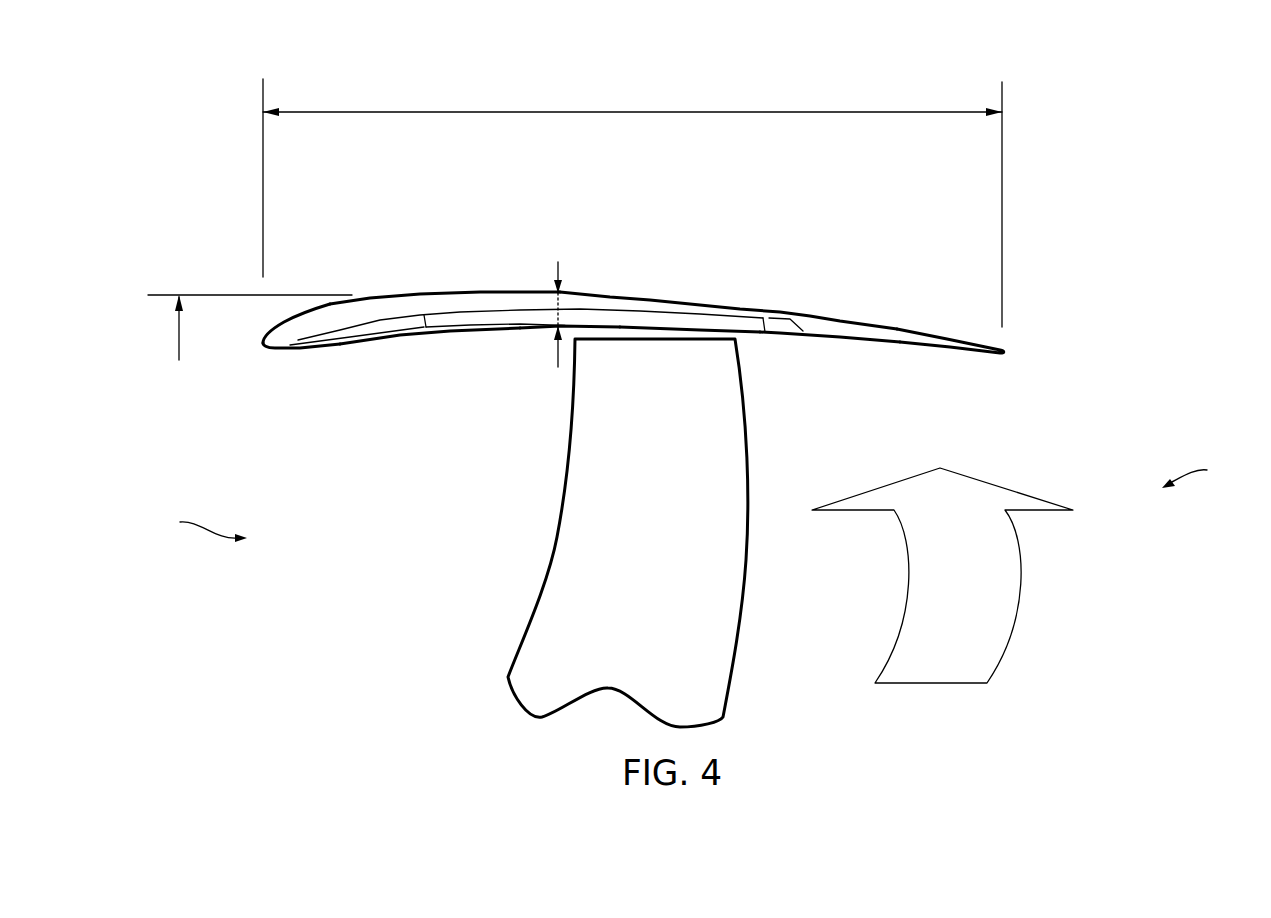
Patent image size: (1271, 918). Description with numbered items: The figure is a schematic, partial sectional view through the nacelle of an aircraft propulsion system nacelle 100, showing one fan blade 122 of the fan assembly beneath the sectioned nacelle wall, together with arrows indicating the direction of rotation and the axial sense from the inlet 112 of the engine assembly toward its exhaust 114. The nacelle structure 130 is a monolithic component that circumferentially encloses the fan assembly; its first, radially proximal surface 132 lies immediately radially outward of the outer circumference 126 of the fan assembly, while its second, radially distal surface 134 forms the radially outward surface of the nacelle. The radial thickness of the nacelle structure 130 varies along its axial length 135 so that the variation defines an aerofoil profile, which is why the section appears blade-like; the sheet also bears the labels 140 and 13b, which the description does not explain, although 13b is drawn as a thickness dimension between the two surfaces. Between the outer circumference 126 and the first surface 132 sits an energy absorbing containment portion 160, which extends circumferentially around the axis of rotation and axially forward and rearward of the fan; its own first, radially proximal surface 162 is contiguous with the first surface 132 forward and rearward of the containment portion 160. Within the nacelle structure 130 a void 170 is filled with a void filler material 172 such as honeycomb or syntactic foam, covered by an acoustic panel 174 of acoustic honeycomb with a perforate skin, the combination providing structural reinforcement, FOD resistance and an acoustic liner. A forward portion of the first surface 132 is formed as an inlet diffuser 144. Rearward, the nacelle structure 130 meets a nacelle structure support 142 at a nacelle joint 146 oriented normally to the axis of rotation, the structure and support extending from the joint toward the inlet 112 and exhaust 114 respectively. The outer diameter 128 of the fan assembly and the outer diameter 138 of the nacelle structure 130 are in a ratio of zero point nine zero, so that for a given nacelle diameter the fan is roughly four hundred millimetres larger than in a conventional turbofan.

The aircraft propulsion system nacelle 100 is at (850, 196).
The inlet 112 is at (187, 524).
The exhaust 114 is at (1034, 559).
The fan blade 122 is at (583, 515).
The outer circumference of the fan assembly 126 is at (623, 330).
The outer diameter of the fan assembly 128 is at (700, 334).
The nacelle structure 130 is at (592, 294).
The first, radially proximal surface 132 is at (781, 333).
The second, radially distal surface 134 is at (405, 297).
The axial length 135 is at (505, 112).
The outer diameter of the nacelle structure 138 is at (237, 327).
The thickness 13b is at (558, 268).
The leading edge 140 is at (355, 298).
The nacelle structure support 142 is at (897, 328).
The inlet diffuser 144 is at (448, 336).
The nacelle joint 146 is at (790, 318).
The containment portion 160 is at (517, 329).
The first, radially proximal surface of the containment portion 162 is at (499, 320).
The void 170 is at (403, 323).
The void filler material 172 is at (373, 328).
The acoustic panel 174 is at (337, 347).